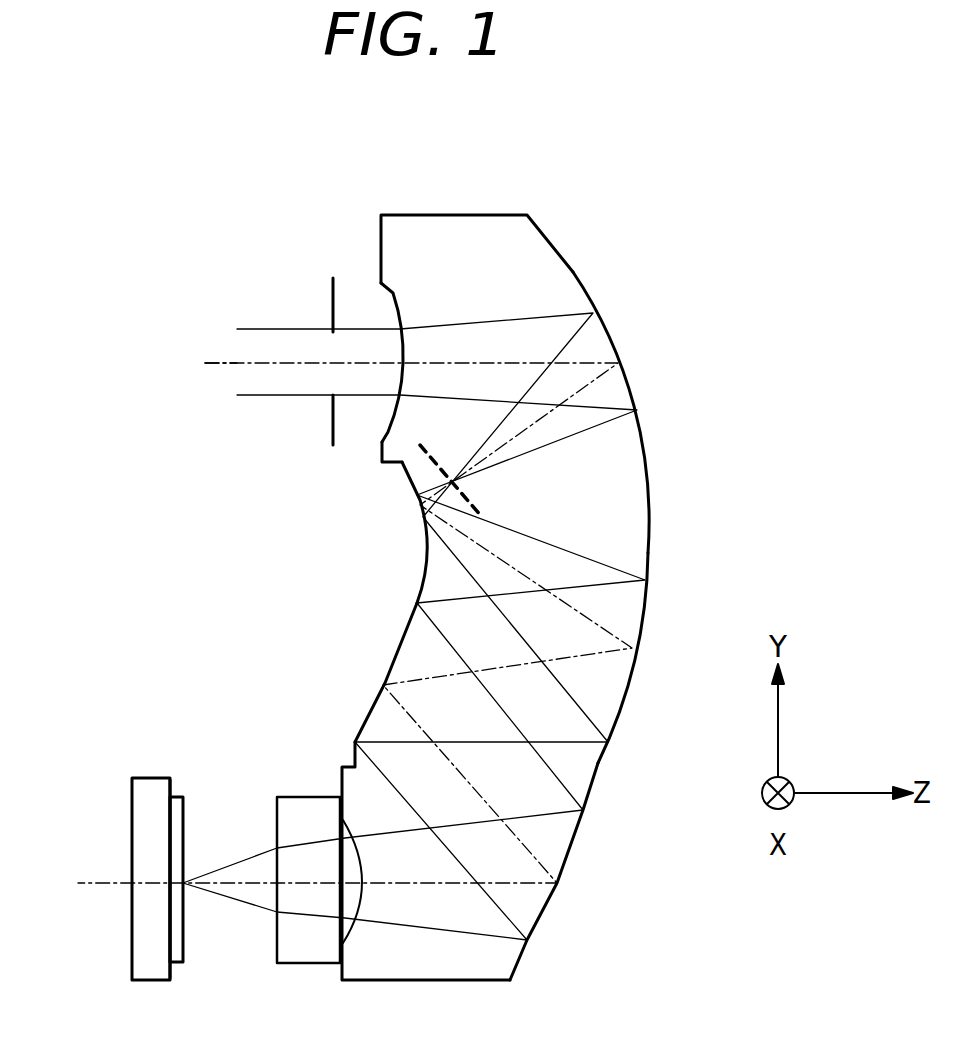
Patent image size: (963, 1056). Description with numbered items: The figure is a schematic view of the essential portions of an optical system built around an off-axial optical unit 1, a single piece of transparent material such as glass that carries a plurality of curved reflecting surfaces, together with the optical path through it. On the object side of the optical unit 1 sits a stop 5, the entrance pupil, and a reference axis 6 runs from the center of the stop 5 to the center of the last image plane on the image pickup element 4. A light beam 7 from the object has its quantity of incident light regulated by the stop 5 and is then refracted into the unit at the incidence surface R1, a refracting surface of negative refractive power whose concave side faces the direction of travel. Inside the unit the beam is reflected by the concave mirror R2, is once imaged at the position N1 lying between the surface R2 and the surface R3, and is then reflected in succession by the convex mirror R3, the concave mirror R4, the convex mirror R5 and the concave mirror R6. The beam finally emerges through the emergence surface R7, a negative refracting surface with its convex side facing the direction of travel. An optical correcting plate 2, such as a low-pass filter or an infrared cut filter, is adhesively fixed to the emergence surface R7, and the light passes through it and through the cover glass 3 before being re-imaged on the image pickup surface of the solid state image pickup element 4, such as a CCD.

The off-axial optical unit 1 is at (519, 606).
The optical correcting plate 2 is at (277, 812).
The cover glass 3 is at (183, 948).
The image pickup element 4 is at (91, 892).
The stop 5 is at (333, 290).
The reference axis 6 is at (213, 362).
The light beam 7 is at (283, 329).
The incidence surface R1 is at (392, 295).
The concave mirror R2 is at (573, 272).
The convex mirror R3 is at (428, 543).
The concave mirror R4 is at (647, 588).
The convex mirror R5 is at (383, 685).
The concave mirror R6 is at (553, 910).
The emergence surface R7 is at (353, 937).
The intermediate imaging position N1 is at (437, 467).